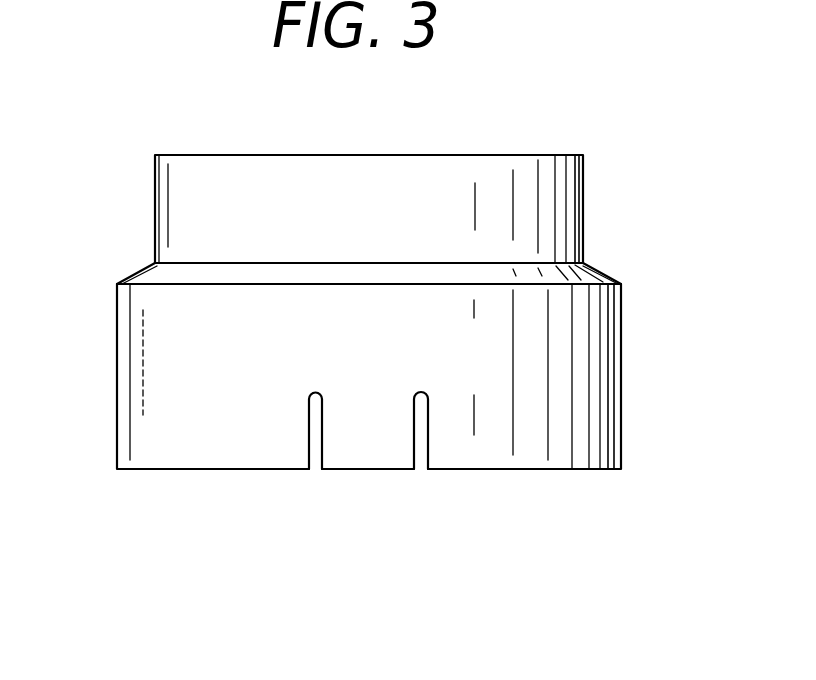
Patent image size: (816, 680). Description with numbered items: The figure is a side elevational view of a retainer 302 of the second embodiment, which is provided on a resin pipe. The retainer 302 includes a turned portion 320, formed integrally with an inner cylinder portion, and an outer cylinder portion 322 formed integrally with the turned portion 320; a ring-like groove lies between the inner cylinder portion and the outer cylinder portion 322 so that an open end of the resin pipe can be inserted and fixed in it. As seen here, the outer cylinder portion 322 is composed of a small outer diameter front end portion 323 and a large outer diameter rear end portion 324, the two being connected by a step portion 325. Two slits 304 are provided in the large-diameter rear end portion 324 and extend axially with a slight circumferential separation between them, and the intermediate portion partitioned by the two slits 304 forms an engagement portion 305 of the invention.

The retainer 302 is at (330, 146).
The turned portion 320 is at (466, 153).
The small outer diameter front end portion 323 is at (569, 193).
The outer cylinder portion 322 is at (638, 241).
The step portion 325 is at (150, 268).
The large outer diameter rear end portion 324 is at (621, 346).
The slits 304 is at (316, 392).
The engagement portion 305 is at (373, 455).